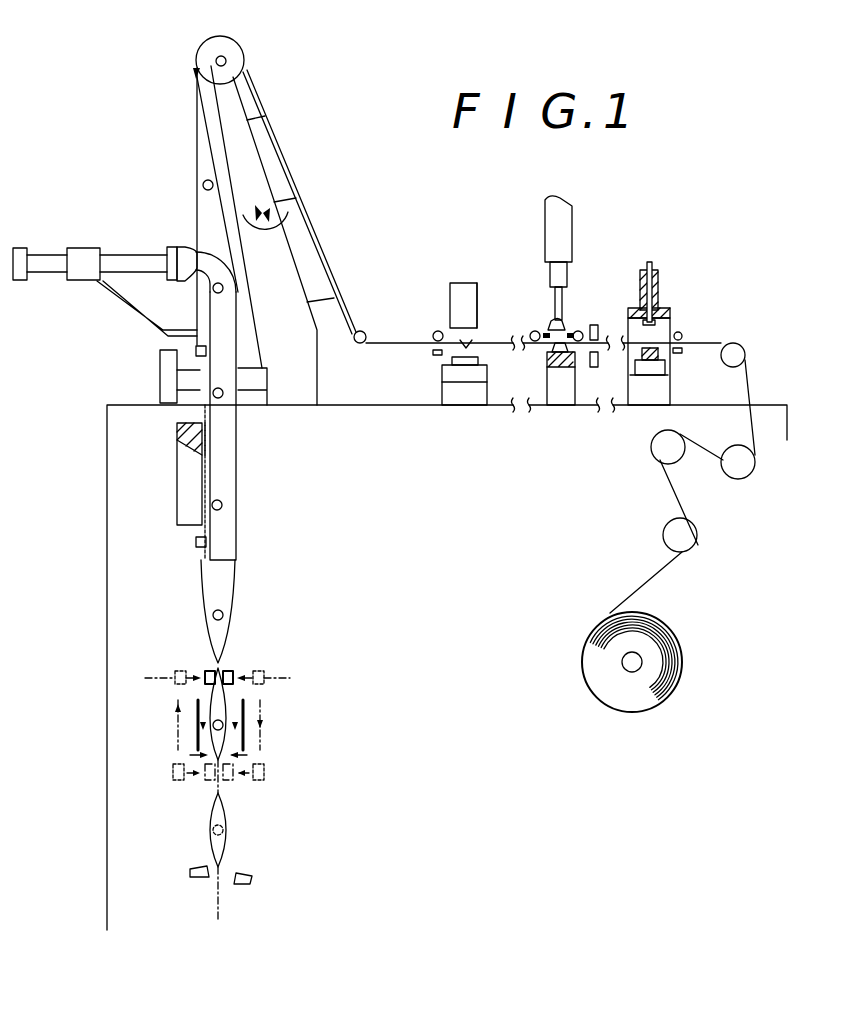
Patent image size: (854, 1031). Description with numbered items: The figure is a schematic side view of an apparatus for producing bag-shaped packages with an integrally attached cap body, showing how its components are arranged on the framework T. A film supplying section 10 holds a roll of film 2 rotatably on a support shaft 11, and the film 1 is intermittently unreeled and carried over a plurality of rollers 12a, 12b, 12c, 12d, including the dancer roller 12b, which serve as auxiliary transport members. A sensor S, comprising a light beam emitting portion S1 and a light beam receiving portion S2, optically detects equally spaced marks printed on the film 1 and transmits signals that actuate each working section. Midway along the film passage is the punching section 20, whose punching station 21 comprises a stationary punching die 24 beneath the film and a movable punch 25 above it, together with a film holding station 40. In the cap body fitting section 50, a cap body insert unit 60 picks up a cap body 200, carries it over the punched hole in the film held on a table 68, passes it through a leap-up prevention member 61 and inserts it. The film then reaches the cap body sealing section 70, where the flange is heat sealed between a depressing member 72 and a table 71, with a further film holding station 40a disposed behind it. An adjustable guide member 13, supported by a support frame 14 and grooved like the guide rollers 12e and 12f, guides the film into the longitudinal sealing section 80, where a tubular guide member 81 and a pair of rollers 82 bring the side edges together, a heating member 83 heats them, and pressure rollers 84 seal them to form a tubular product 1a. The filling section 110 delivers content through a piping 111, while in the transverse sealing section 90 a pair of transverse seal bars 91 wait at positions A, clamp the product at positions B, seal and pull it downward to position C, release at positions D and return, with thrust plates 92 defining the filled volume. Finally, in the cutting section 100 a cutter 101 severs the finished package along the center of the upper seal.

The film 1 is at (653, 584).
The tubular product 1a is at (234, 586).
The roll of film 2 is at (683, 661).
The film supplying section 10 is at (624, 588).
The support shaft 11 is at (624, 671).
The roller 12a is at (672, 530).
The dancer roller 12b is at (679, 461).
The roller 12c is at (747, 472).
The roller 12d is at (746, 356).
The guide roller 12e is at (362, 331).
The guide roller 12f is at (242, 47).
The guide member 13 is at (290, 180).
The support frame 14 is at (283, 293).
The punching section 20 is at (728, 243).
The punching station 21 is at (670, 288).
The stationary punching die 24 is at (666, 362).
The movable punch 25 is at (633, 305).
The film holding station 40 is at (682, 334).
The film holding station 40a is at (412, 320).
The cap body fitting section 50 is at (544, 306).
The cap body insert unit 60 is at (572, 226).
The leap-up prevention member 61 is at (545, 343).
The table 68 is at (570, 396).
The cap body sealing section 70 is at (450, 278).
The table 71 is at (455, 370).
The depressing member 72 is at (478, 318).
The longitudinal sealing section 80 is at (215, 436).
The tubular guide member 81 is at (232, 486).
The rollers 82 is at (196, 352).
The heating member 83 is at (183, 483).
The pressure rollers 84 is at (196, 542).
The transverse sealing section 90 is at (228, 706).
The transverse seal bars 91 is at (236, 672).
The thrust plates 92 is at (270, 750).
The cutting section 100 is at (246, 858).
The cutter 101 is at (253, 876).
The filling section 110 is at (90, 225).
The piping 111 is at (134, 250).
The cap body 200 is at (462, 346).
The waiting positions A is at (218, 677).
The clamping positions B is at (236, 688).
The position where transverse sealing and downward pulling is completed C is at (232, 782).
The release positions D is at (262, 781).
The sensor S is at (603, 318).
The light beam emitting portion S1 is at (593, 326).
The light beam receiving portion S2 is at (598, 361).
The framework T is at (96, 455).